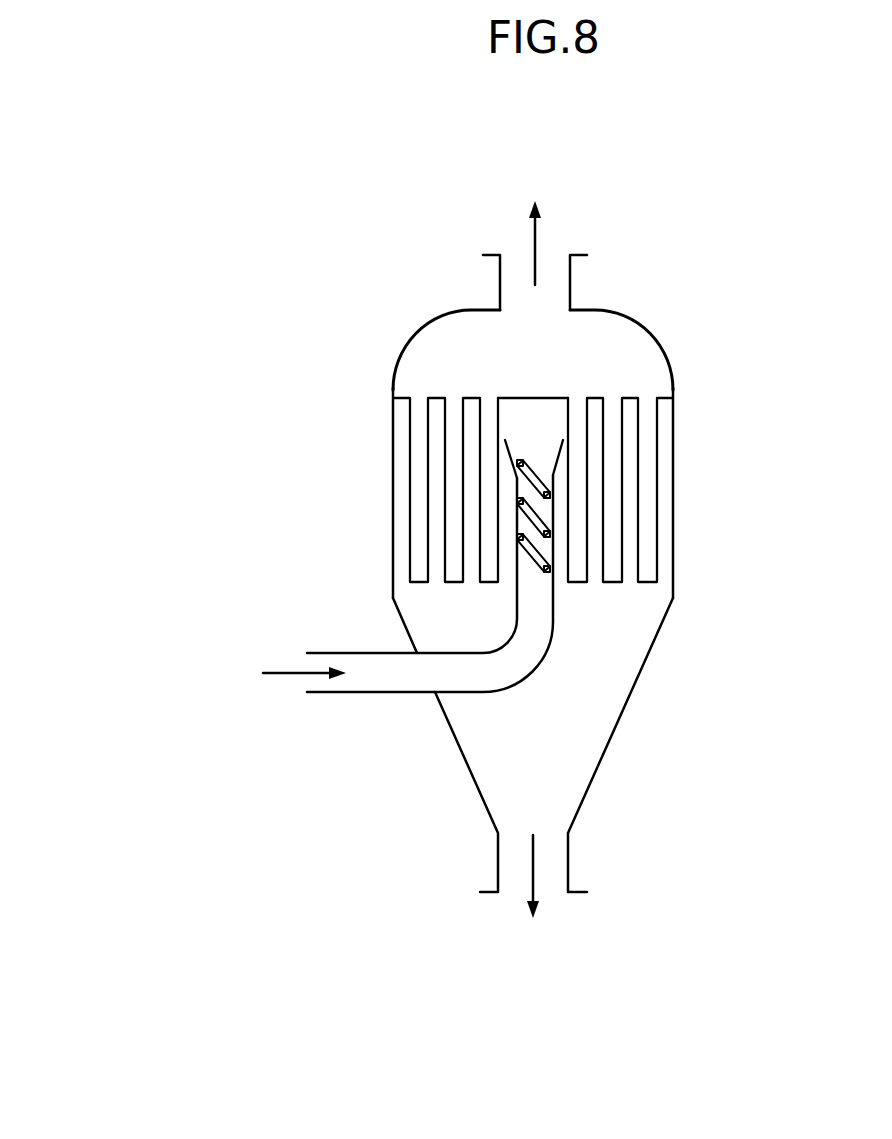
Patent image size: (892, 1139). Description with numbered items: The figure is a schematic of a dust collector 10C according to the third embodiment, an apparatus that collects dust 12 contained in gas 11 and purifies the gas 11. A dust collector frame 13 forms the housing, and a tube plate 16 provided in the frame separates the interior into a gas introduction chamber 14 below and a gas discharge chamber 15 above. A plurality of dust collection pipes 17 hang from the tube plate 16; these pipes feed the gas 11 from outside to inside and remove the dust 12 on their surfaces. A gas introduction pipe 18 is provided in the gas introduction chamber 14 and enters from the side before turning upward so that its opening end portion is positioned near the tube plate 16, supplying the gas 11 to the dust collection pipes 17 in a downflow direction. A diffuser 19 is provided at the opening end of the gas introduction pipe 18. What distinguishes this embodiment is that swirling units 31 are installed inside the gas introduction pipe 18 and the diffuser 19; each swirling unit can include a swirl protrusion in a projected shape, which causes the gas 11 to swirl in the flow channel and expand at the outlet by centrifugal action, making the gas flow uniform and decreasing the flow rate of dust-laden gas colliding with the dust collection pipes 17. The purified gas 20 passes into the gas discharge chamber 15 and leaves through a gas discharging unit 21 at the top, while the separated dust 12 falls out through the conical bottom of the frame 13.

The dust collector 10C is at (463, 207).
The gas 11 is at (280, 672).
The dust 12 is at (535, 893).
The dust collector frame 13 is at (674, 548).
The gas introduction chamber 14 is at (645, 647).
The gas discharge chamber 15 is at (640, 338).
The tube plate 16 is at (537, 398).
The dust collection pipes 17 is at (410, 462).
The gas introduction pipe 18 is at (541, 662).
The diffuser 19 is at (556, 463).
The purified gas 20 is at (536, 232).
The gas discharging unit 21 is at (571, 288).
The swirling units 31 is at (538, 512).